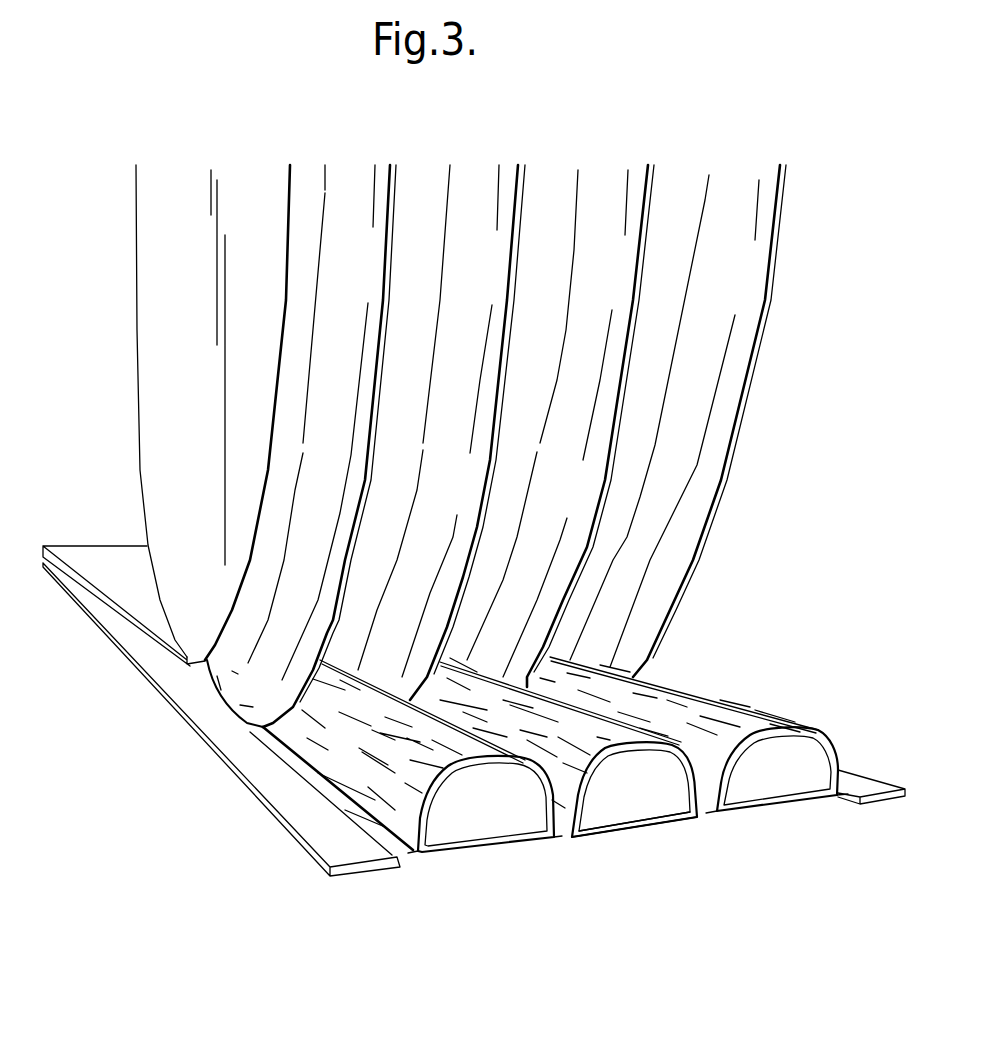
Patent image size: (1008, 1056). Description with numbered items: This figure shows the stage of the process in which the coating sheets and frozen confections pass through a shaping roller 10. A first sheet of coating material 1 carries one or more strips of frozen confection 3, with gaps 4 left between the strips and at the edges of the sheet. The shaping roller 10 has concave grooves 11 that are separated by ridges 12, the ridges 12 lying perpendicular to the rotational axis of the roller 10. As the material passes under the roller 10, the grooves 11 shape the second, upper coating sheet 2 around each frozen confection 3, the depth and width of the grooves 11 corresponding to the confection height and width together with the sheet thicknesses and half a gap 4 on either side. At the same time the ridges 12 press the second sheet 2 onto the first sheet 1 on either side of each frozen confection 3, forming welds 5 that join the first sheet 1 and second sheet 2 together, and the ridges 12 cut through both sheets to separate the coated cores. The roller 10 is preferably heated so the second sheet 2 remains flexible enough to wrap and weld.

The first sheet of coating material 1 is at (95, 607).
The second coating sheet 2 is at (108, 553).
The frozen confection 3 is at (443, 820).
The gaps 4 is at (707, 817).
The welds 5 is at (428, 855).
The shaping roller 10 is at (152, 399).
The concave grooves 11 is at (397, 660).
The ridges 12 is at (238, 720).